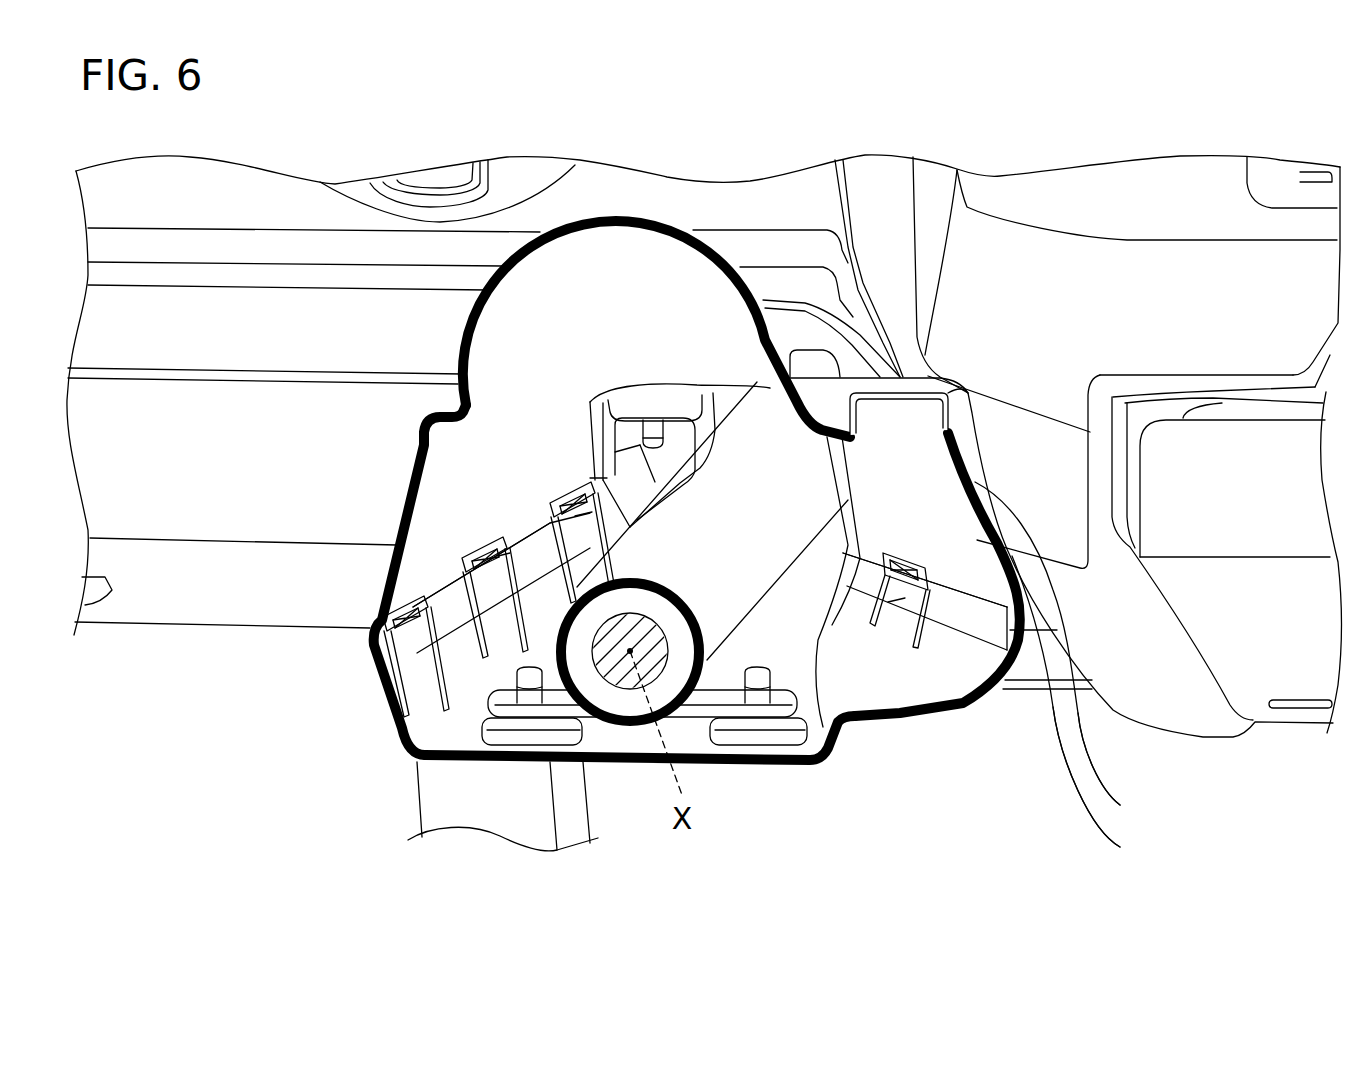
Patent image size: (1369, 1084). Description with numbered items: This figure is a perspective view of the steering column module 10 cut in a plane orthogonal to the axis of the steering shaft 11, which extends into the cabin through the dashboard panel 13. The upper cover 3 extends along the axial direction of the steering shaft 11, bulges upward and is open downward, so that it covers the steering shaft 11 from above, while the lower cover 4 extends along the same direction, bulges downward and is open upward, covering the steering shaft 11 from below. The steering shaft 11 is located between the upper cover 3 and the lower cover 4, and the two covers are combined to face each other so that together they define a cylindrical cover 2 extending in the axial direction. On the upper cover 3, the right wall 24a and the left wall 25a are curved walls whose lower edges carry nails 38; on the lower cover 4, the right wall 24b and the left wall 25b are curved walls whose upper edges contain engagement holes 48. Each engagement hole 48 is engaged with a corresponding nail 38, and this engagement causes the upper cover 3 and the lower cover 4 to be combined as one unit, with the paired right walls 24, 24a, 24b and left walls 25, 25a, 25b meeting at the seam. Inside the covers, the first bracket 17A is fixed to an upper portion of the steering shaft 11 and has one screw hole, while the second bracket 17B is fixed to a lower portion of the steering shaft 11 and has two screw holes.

The cylindrical cover 2 is at (393, 462).
The upper cover 3 is at (665, 218).
The lower cover 4 is at (822, 762).
The steering column module 10 is at (930, 863).
The steering shaft 11 is at (787, 527).
The dashboard panel 13 is at (157, 580).
The first bracket 17A is at (715, 428).
The second bracket 17B is at (713, 697).
The wire harness 24 is at (1190, 785).
The right wall 24a is at (1081, 653).
The right wall 24b is at (1100, 711).
The panel member 25 is at (190, 687).
The left wall 25a is at (393, 520).
The left wall 25b is at (397, 717).
The nail 38 is at (400, 585).
The engagement hole 48 is at (503, 557).